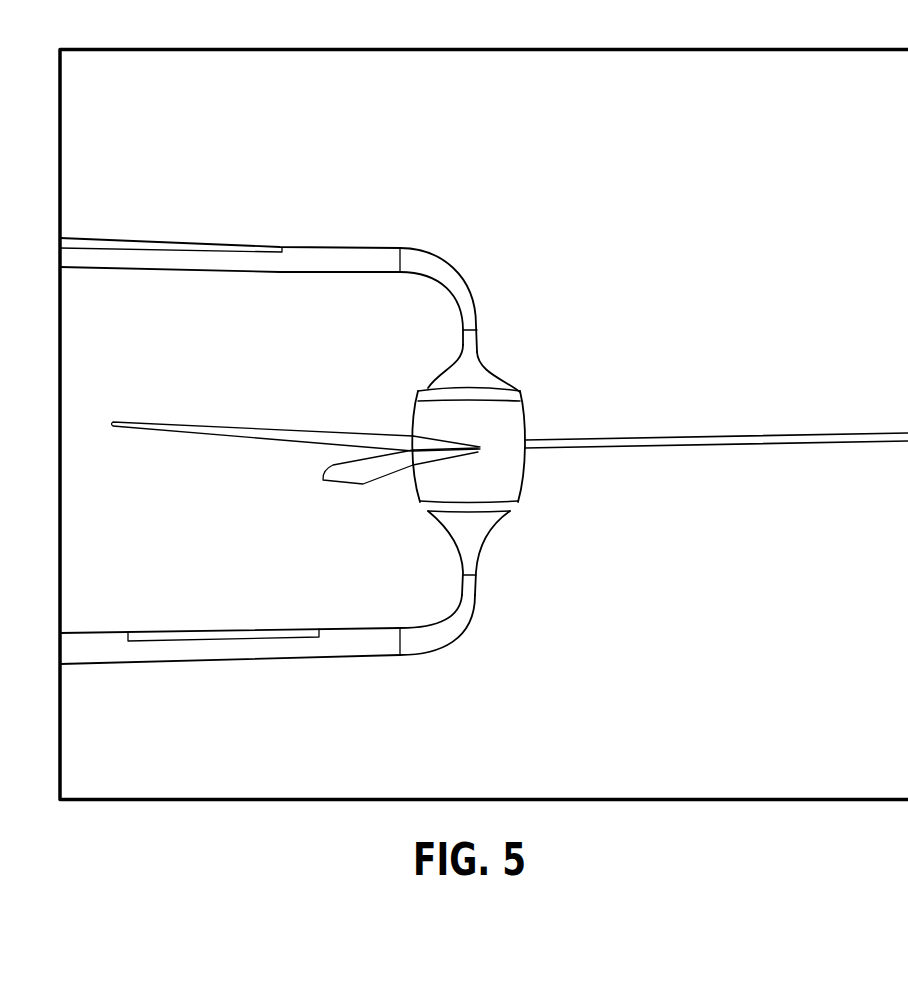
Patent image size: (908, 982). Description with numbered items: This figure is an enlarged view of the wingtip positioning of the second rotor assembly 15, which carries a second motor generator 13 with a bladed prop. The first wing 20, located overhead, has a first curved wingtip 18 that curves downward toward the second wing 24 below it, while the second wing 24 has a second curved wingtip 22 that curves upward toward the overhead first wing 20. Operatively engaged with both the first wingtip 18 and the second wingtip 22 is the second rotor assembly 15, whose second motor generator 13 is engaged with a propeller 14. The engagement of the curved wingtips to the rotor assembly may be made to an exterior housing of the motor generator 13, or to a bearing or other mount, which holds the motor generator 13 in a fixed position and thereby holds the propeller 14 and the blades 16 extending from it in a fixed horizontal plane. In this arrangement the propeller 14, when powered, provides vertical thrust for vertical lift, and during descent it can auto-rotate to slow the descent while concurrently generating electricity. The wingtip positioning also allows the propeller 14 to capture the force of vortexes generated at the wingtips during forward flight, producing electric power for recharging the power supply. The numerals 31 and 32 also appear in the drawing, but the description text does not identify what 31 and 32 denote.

The second motor generator 13 is at (508, 387).
The propeller 14 is at (513, 480).
The second rotor assembly 15 is at (388, 402).
The blades 16 is at (647, 443).
The first curved wingtip 18 is at (472, 322).
The first wing 20 is at (317, 256).
The second curved wingtip 22 is at (468, 595).
The second wing 24 is at (384, 638).
The interior cavity 31 is at (112, 329).
The side panel 32 is at (170, 243).